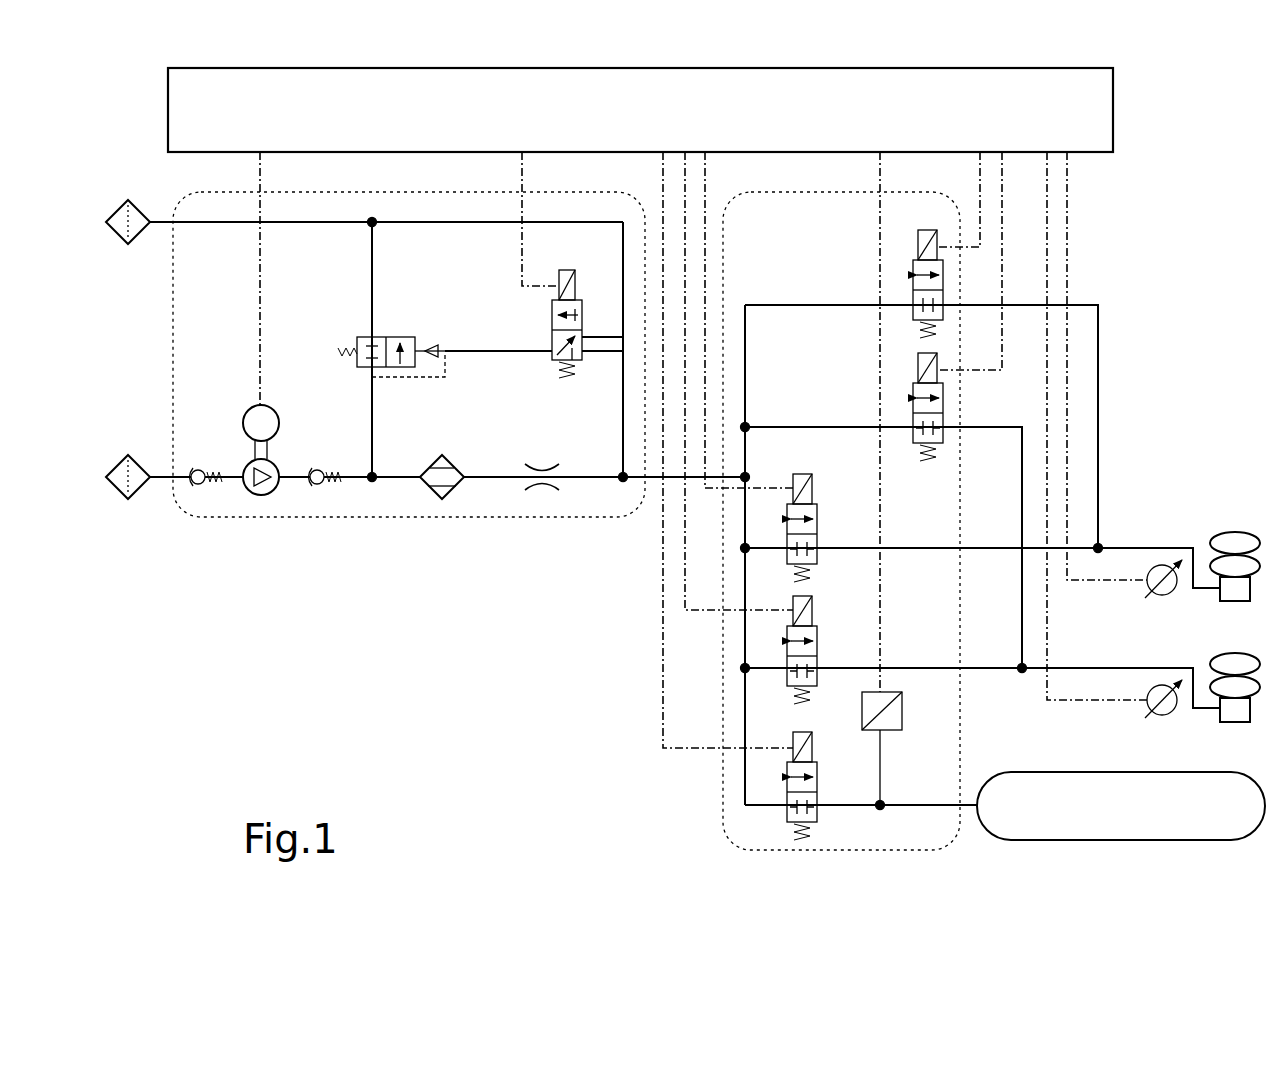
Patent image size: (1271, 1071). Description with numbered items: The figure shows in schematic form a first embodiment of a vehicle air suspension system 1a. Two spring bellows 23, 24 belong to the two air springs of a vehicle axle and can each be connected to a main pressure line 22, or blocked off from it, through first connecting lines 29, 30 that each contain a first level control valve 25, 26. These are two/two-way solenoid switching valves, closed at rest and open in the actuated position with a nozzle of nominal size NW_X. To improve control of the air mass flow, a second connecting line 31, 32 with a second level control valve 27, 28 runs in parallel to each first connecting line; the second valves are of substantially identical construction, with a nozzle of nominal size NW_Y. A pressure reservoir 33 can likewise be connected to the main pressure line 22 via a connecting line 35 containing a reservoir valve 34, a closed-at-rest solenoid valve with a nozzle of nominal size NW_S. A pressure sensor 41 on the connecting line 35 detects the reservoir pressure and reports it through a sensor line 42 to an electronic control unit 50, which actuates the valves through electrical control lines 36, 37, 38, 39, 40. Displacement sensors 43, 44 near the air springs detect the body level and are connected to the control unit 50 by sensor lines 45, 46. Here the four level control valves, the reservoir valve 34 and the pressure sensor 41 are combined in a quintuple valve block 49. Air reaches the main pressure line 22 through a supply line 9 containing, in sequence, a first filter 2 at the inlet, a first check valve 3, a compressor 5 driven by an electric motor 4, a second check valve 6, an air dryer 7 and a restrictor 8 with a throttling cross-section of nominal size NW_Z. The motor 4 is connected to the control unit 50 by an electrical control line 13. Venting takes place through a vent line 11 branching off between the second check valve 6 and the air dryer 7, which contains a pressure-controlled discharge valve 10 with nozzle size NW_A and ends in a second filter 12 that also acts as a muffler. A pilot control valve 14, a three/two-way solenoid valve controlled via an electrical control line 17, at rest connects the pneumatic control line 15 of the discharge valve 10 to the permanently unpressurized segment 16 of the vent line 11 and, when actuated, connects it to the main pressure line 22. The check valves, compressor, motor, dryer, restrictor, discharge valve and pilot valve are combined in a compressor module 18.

The air suspension system 1a is at (235, 700).
The first filter 2 is at (142, 492).
The first check valve 3 is at (207, 492).
The electric motor 4 is at (243, 420).
The compressor 5 is at (263, 497).
The second check valve 6 is at (328, 492).
The air dryer 7 is at (450, 498).
The restrictor 8 is at (545, 495).
The supply line 9 is at (400, 482).
The discharge valve 10 is at (357, 323).
The vent line 11 is at (373, 422).
The second filter 12 is at (142, 236).
The electrical control line 13 is at (260, 168).
The pilot control valve 14 is at (545, 323).
The pneumatic control line 15 is at (497, 353).
The permanently unpressurized segment 16 is at (215, 224).
The electrical control line 17 is at (522, 170).
The compressor module 18 is at (370, 520).
The main pressure line 22 is at (623, 482).
The spring bellows 23 is at (1233, 540).
The spring bellows 24 is at (1233, 662).
The first level control valve 25 is at (800, 470).
The first level control valve 26 is at (766, 656).
The second level control valve 27 is at (948, 290).
The second level control valve 28 is at (948, 412).
The first connecting line 29 is at (990, 546).
The first connecting line 30 is at (990, 668).
The second connecting line 31 is at (1098, 375).
The second connecting line 32 is at (1022, 607).
The pressure reservoir 33 is at (1138, 820).
The reservoir valve 34 is at (766, 790).
The connecting line 35 is at (918, 805).
The electrical control line 36 is at (705, 174).
The electrical control line 37 is at (685, 227).
The electrical control line 38 is at (980, 182).
The electrical control line 39 is at (1002, 330).
The electrical control line 40 is at (663, 708).
The pressure sensor 41 is at (905, 712).
The sensor line 42 is at (880, 247).
The displacement sensor 43 is at (1150, 568).
The displacement sensor 44 is at (1150, 690).
The sensor line 45 is at (1067, 208).
The sensor line 46 is at (1047, 243).
The quintuple valve block 49 is at (723, 770).
The electronic control unit 50 is at (660, 126).